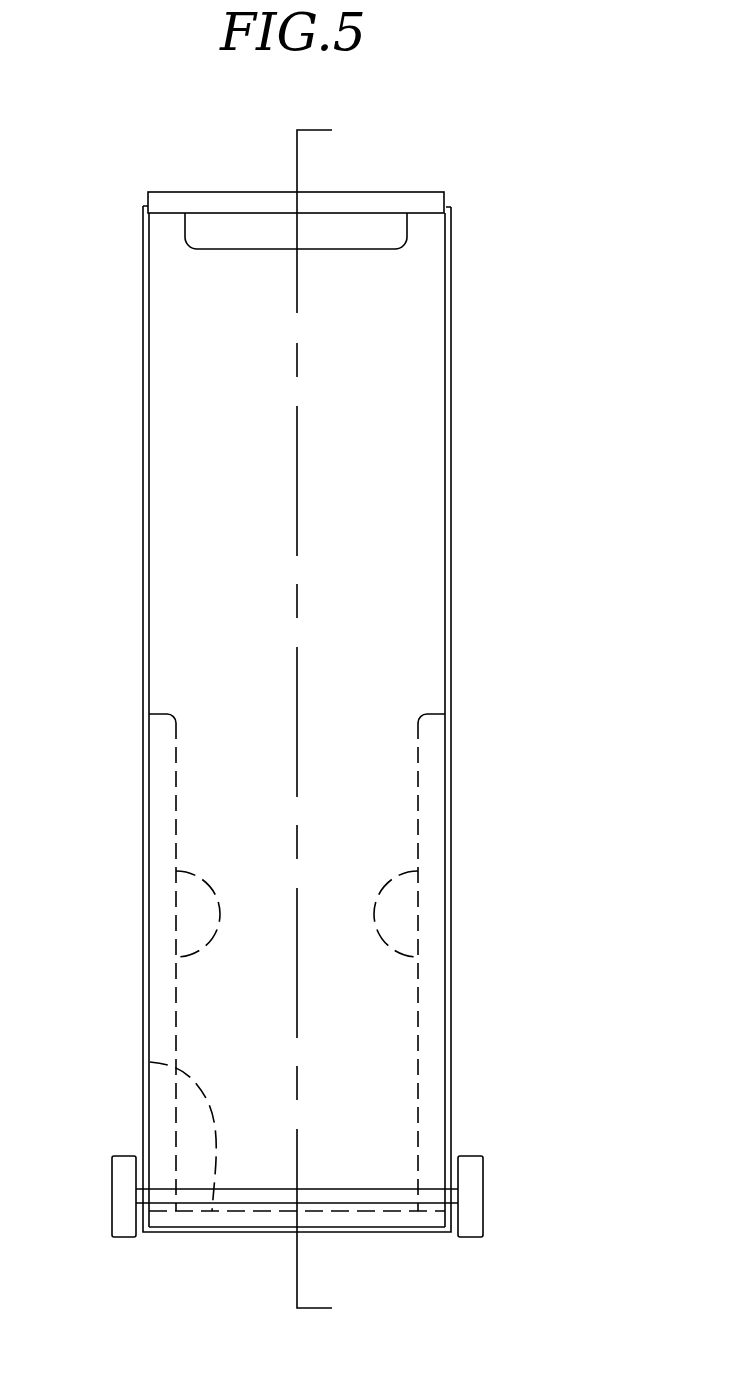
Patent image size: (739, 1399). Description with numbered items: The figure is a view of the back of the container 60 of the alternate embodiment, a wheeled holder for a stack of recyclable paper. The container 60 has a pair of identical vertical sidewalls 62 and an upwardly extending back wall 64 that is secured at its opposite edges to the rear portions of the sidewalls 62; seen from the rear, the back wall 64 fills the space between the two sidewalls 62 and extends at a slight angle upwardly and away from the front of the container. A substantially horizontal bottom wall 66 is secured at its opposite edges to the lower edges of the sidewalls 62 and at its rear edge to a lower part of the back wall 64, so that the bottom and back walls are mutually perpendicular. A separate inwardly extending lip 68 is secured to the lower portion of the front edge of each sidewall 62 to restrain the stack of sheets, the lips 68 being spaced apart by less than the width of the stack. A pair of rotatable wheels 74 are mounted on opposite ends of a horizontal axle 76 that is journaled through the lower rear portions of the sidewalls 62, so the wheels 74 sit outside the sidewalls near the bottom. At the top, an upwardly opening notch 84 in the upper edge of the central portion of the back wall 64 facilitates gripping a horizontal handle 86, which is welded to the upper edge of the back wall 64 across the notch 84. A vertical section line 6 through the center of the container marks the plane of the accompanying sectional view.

The container 60 is at (468, 153).
The sidewalls 62 is at (143, 495).
The back wall 64 is at (190, 400).
The bottom wall 66 is at (150, 1062).
The lip 68 is at (176, 955).
The wheels 74 is at (123, 1153).
The axle 76 is at (317, 1187).
The notch 84 is at (226, 250).
The handle 86 is at (213, 191).
The section line 6- 6 is at (344, 722).